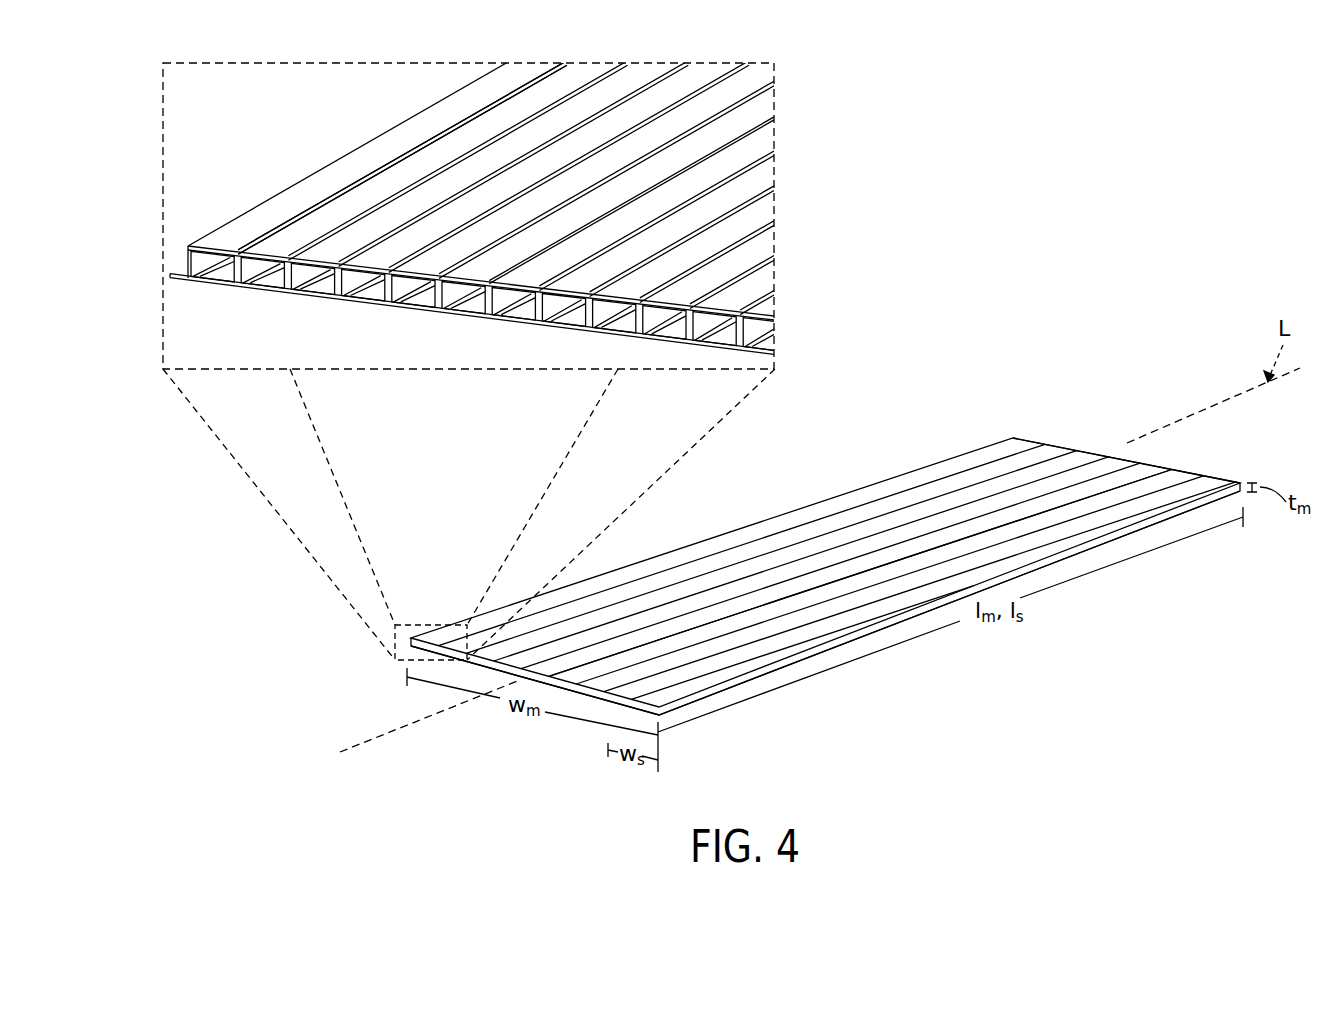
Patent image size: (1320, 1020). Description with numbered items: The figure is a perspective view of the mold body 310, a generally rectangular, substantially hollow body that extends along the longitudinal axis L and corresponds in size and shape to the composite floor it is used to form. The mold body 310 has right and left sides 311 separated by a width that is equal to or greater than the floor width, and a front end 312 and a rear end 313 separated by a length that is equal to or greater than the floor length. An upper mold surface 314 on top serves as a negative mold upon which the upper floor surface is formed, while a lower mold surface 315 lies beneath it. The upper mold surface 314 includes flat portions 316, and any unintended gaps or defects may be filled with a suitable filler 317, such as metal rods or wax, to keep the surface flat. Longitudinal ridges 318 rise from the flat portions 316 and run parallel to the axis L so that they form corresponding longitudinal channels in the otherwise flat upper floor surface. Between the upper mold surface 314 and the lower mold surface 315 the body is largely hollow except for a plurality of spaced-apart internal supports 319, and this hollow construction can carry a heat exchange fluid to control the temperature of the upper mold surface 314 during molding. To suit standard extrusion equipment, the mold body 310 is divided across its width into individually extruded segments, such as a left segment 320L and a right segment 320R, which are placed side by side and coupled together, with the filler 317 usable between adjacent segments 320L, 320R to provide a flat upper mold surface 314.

The mold body 310 is at (965, 389).
The right and left sides 311 is at (878, 622).
The front end 312 is at (573, 676).
The rear end 313 is at (1038, 440).
The upper mold surface 314 is at (884, 476).
The lower mold surface 315 is at (770, 662).
The flat portions 316 is at (350, 160).
The filler 317 is at (745, 128).
The longitudinal ridges 318 is at (310, 240).
The internal supports 319 is at (270, 286).
The left segment 320L is at (513, 77).
The right segment 320R is at (757, 214).